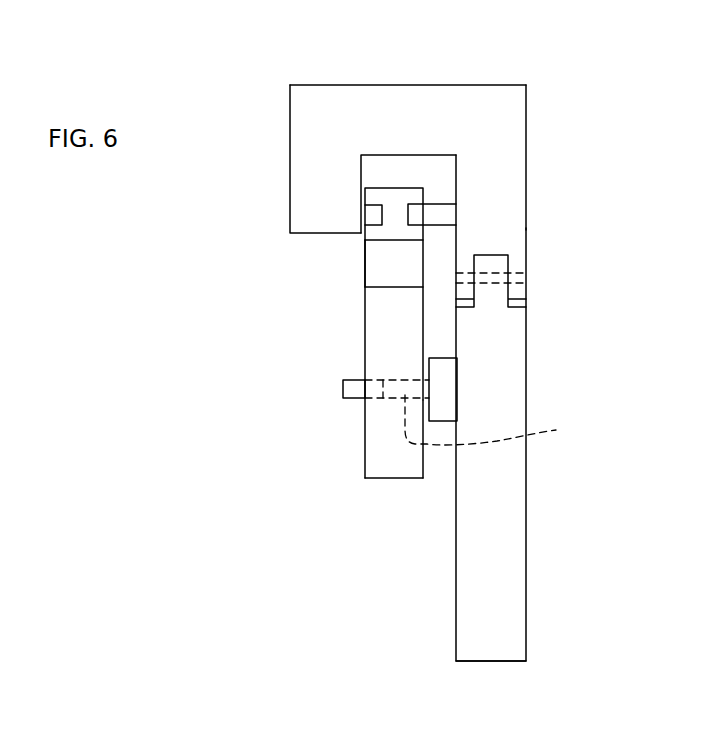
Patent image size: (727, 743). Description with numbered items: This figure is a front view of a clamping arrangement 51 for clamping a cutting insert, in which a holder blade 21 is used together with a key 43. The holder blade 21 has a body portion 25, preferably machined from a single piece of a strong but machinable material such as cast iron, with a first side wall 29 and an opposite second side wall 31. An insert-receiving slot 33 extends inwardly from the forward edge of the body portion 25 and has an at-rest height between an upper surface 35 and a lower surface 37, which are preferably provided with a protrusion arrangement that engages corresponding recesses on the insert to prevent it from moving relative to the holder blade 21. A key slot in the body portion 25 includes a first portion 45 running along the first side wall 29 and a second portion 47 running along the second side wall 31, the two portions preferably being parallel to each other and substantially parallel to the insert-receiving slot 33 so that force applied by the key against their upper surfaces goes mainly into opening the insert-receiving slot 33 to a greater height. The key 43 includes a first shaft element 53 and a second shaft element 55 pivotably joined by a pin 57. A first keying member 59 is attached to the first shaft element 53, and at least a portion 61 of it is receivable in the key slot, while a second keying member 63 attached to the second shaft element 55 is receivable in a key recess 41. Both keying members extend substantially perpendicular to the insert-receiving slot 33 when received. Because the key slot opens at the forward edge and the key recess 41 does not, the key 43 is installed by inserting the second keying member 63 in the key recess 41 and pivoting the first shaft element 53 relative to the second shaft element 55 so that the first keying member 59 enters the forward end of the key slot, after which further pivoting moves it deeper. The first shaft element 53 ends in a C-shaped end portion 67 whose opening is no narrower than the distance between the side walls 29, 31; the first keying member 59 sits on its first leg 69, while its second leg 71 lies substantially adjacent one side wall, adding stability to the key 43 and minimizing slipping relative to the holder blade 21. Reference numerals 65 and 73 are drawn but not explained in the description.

The holder blade 21 is at (387, 362).
The body portion 25 is at (359, 340).
The first side wall 29 is at (425, 466).
The second side wall 31 is at (365, 468).
The insert-receiving slot 33 is at (389, 265).
The upper surface of the insert-receiving slot 35 is at (380, 242).
The lower surface of the insert-receiving slot 37 is at (380, 282).
The key recess 41 is at (384, 398).
The key 43 is at (545, 526).
The first portion of the key slot 45 is at (434, 203).
The second portion of the key slot 47 is at (370, 212).
The clamping arrangement 51 is at (384, 74).
The first shaft element 53 is at (504, 345).
The second shaft element 55 is at (532, 371).
The pin 57 is at (520, 282).
The first keying member 59 is at (445, 203).
The portion of the first keying member 61 is at (430, 204).
The second keying member 63 is at (343, 390).
The channel 65 is at (498, 420).
The C-shaped end portion 67 is at (359, 114).
The first leg 69 is at (508, 112).
The second leg 71 is at (302, 125).
The stop block 73 is at (450, 368).